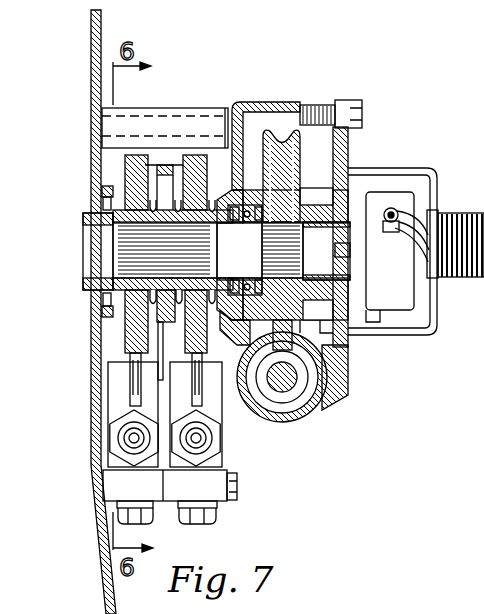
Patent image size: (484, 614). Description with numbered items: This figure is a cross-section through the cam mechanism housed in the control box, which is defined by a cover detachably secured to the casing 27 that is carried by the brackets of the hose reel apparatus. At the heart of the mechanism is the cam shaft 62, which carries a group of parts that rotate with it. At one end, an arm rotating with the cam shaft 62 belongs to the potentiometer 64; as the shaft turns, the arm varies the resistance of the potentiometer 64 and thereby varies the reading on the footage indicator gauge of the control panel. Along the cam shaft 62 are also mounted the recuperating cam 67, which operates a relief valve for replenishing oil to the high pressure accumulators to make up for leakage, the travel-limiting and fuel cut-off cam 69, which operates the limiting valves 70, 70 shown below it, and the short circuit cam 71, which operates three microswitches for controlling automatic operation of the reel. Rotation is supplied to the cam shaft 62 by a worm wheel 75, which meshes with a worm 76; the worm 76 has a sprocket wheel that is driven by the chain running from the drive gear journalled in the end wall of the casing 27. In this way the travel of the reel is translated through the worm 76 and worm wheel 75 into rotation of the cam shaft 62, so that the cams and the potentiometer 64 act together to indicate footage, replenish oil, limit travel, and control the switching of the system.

The casing 27 is at (90, 72).
The cam shaft 62 is at (95, 253).
The potentiometer 64 is at (391, 200).
The recuperating cam 67 is at (173, 197).
The travel-limiting and fuel cut-off cam 69 is at (130, 333).
The limiting valve 70 is at (118, 406).
The short circuit cam 71 is at (190, 338).
The worm wheel 75 is at (268, 135).
The worm 76 is at (285, 400).